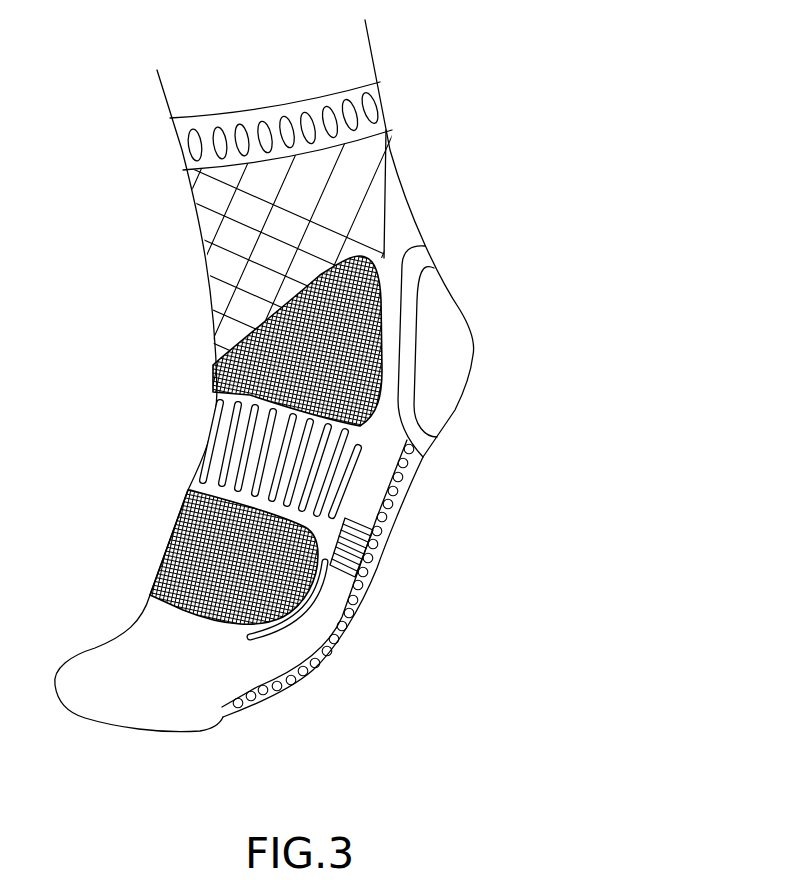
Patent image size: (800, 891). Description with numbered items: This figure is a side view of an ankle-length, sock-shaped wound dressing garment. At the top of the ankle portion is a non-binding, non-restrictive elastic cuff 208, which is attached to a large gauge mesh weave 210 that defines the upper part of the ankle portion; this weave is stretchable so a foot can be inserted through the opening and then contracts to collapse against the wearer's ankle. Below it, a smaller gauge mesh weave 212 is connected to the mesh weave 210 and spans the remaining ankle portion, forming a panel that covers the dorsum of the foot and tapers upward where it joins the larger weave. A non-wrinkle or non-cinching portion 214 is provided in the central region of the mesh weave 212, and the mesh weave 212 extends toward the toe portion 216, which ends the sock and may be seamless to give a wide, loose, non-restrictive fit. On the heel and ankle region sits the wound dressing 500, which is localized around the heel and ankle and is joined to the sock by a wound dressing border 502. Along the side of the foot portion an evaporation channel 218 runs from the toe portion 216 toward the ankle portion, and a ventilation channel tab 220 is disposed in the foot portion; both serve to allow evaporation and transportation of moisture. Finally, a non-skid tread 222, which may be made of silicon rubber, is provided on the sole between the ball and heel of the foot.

The wound dressing 500 is at (487, 340).
The wound dressing border 502 is at (422, 247).
The elastic cuff 208 is at (380, 127).
The large gauge mesh weave 210 is at (203, 235).
The smaller gauge mesh weave 212 is at (165, 568).
The non-wrinkle portion 214 is at (197, 445).
The toe portion 216 is at (100, 713).
The evaporation channel 218 is at (310, 588).
The ventilation channel tab 220 is at (368, 542).
The non-skid tread 222 is at (312, 668).